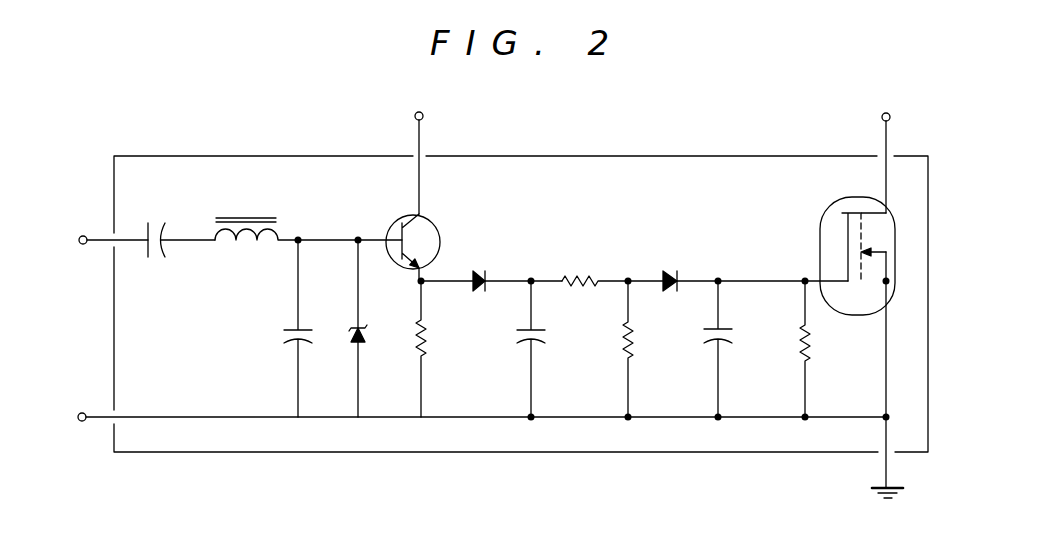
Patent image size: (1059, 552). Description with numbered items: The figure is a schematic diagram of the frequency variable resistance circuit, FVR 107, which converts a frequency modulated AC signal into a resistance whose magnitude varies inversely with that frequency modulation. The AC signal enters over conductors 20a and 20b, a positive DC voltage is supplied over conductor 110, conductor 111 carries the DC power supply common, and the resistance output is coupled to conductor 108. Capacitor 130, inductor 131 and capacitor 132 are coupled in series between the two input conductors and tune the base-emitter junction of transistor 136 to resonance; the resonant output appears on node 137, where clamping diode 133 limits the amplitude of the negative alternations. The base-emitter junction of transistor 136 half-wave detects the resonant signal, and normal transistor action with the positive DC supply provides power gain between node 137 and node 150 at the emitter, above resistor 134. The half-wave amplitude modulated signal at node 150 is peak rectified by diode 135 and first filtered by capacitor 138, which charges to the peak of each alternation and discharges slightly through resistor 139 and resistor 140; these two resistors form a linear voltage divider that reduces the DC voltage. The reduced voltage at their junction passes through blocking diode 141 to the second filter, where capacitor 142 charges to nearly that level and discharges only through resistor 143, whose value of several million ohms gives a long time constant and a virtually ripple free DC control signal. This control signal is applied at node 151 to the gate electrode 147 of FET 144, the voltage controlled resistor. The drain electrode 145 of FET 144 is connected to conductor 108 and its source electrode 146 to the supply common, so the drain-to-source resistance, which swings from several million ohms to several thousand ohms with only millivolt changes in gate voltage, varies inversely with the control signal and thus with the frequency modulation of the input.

The conductor 20a is at (82, 235).
The conductor 20b is at (81, 412).
The FVR 107 is at (930, 268).
The conductor 108 is at (881, 118).
The conductor 110 is at (413, 119).
The conductor 111 is at (898, 494).
The capacitor 130 is at (156, 258).
The inductor 131 is at (218, 218).
The capacitor 132 is at (288, 338).
The clamping diode 133 is at (363, 335).
The resistor 134 is at (428, 336).
The diode 135 is at (479, 275).
The transistor 136 is at (437, 227).
The node 137 is at (357, 237).
The capacitor 138 is at (545, 335).
The resistor 139 is at (578, 275).
The resistor 140 is at (632, 336).
The blocking diode 141 is at (670, 276).
The capacitor 142 is at (728, 335).
The resistor 143 is at (811, 340).
The FET 144 is at (838, 201).
The drain electrode 145 is at (880, 228).
The source electrode 146 is at (890, 284).
The gate electrode 147 is at (839, 232).
The node 150 is at (418, 281).
The node 151 is at (804, 278).